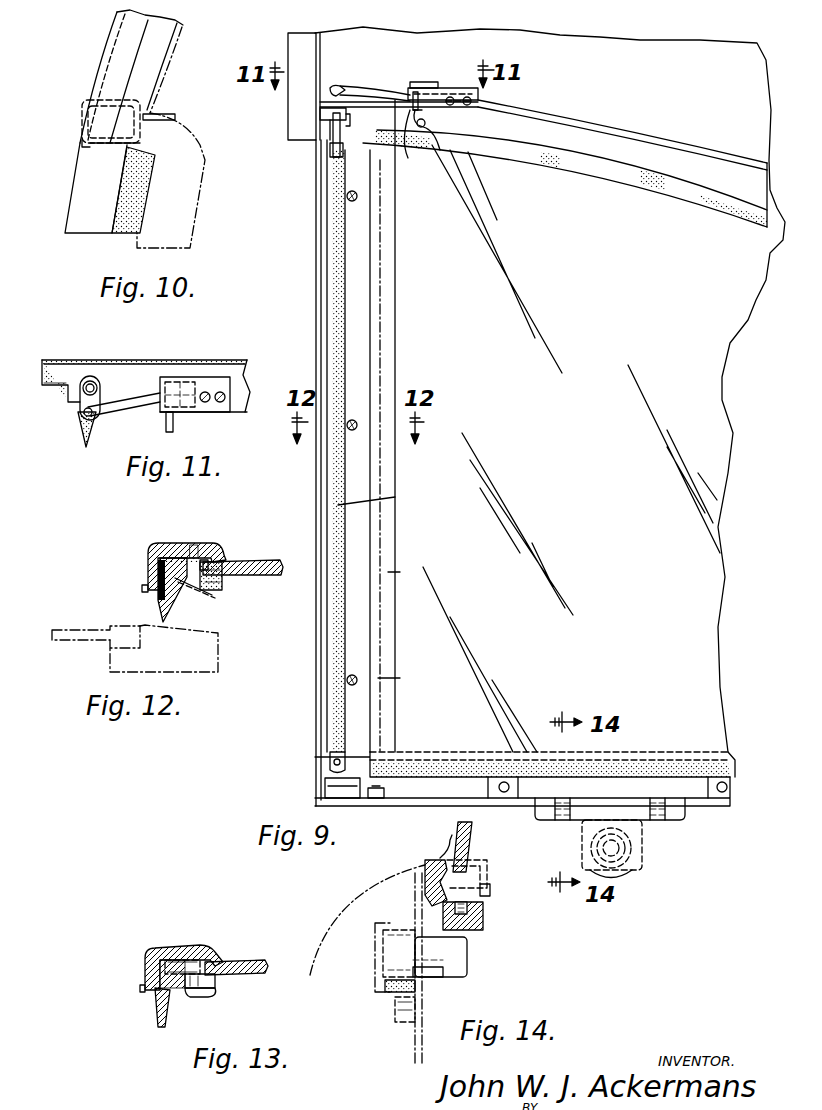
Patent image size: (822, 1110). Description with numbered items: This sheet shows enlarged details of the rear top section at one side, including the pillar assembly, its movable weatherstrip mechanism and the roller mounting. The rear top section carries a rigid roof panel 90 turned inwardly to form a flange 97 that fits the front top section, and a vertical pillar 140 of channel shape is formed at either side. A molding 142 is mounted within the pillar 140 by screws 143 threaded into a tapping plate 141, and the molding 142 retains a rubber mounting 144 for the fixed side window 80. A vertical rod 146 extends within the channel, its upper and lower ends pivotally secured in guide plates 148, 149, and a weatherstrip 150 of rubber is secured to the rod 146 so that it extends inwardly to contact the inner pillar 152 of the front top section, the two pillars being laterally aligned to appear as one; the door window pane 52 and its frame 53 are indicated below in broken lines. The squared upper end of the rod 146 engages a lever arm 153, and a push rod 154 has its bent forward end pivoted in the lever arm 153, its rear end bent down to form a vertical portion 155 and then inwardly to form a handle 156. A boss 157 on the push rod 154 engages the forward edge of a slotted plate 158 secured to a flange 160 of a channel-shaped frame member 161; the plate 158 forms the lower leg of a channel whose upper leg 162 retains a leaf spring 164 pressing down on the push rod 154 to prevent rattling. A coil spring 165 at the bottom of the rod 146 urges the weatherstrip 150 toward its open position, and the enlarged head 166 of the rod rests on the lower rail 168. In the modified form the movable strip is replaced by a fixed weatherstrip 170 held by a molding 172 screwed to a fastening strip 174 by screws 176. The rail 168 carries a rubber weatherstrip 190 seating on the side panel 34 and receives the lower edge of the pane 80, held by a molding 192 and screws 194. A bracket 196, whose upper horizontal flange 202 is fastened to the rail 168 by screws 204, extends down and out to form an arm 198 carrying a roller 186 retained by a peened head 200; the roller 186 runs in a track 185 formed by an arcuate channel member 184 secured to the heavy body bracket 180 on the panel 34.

In FIG. 14, the rear panel 34 is at (378, 880).
In FIG. 12, the window pane 52 is at (75, 620).
In FIG. 12, the frame 53 is at (112, 640).
In FIG. 9, the side window 80 is at (571, 448).
In FIG. 12, the side window 80 is at (260, 562).
In FIG. 13, the side window 80 is at (240, 963).
In FIG. 14, the side window 80 is at (472, 832).
In FIG. 9, the roof panel 90 is at (550, 389).
In FIG. 10, the roof panel 90 is at (113, 48).
In FIG. 11, the roof panel 90 is at (90, 360).
In FIG. 9, the flange 97 is at (300, 48).
In FIG. 10, the flange 97 is at (105, 85).
In FIG. 11, the flange 97 is at (56, 362).
In FIG. 9, the vertical pillar 140 is at (365, 293).
In FIG. 10, the vertical pillar 140 is at (80, 198).
In FIG. 12, the vertical pillar 140 is at (147, 560).
In FIG. 13, the vertical pillar 140 is at (152, 948).
In FIG. 12, the tapping plate 141 is at (163, 556).
In FIG. 9, the molding 142 is at (411, 571).
In FIG. 12, the molding 142 is at (222, 590).
In FIG. 9, the screws 143 is at (406, 677).
In FIG. 12, the screws 143 is at (195, 556).
In FIG. 12, the rubber mounting 144 is at (222, 562).
In FIG. 9, the vertical rod 146 is at (330, 129).
In FIG. 11, the vertical rod 146 is at (100, 380).
In FIG. 12, the vertical rod 146 is at (184, 588).
In FIG. 9, the guide plate 148 is at (341, 120).
In FIG. 9, the guide plate 149 is at (384, 790).
In FIG. 9, the weatherstrip 150 is at (385, 498).
In FIG. 10, the weatherstrip 150 is at (140, 200).
In FIG. 11, the weatherstrip 150 is at (78, 425).
In FIG. 12, the weatherstrip 150 is at (160, 603).
In FIG. 10, the inner pillar 152 is at (193, 222).
In FIG. 12, the inner pillar 152 is at (218, 654).
In FIG. 9, the lever arm 153 is at (333, 86).
In FIG. 11, the lever arm 153 is at (84, 410).
In FIG. 9, the push rod 154 is at (380, 86).
In FIG. 11, the push rod 154 is at (145, 393).
In FIG. 9, the vertical portion 155 is at (408, 160).
In FIG. 9, the handle 156 is at (440, 150).
In FIG. 10, the handle 156 is at (163, 114).
In FIG. 11, the handle 156 is at (174, 426).
In FIG. 9, the boss 157 is at (414, 92).
In FIG. 9, the slotted plate 158 is at (452, 106).
In FIG. 11, the slotted plate 158 is at (186, 377).
In FIG. 9, the flange 160 is at (580, 118).
In FIG. 9, the frame member 161 is at (655, 148).
In FIG. 9, the upper leg 162 is at (474, 88).
In FIG. 9, the leaf spring 164 is at (430, 82).
In FIG. 9, the coil spring 165 is at (330, 762).
In FIG. 9, the enlarged head 166 is at (325, 788).
In FIG. 9, the rail 168 is at (708, 805).
In FIG. 14, the rail 168 is at (448, 855).
In FIG. 13, the fixed weatherstrip 170 is at (165, 1000).
In FIG. 13, the molding 172 is at (218, 986).
In FIG. 13, the fastening strip 174 is at (200, 952).
In FIG. 13, the screws 176 is at (212, 995).
In FIG. 14, the body bracket 180 is at (412, 1052).
In FIG. 14, the channel member 184 is at (372, 932).
In FIG. 14, the track 185 is at (393, 1005).
In FIG. 9, the roller 186 is at (622, 870).
In FIG. 14, the roller 186 is at (395, 990).
In FIG. 9, the rubber weatherstrip 190 is at (658, 752).
In FIG. 14, the rubber weatherstrip 190 is at (427, 862).
In FIG. 14, the molding 192 is at (490, 872).
In FIG. 14, the screws 194 is at (492, 888).
In FIG. 9, the bracket 196 is at (642, 840).
In FIG. 14, the bracket 196 is at (462, 957).
In FIG. 14, the arm 198 is at (436, 975).
In FIG. 14, the peened head 200 is at (380, 960).
In FIG. 9, the upper horizontal flange 202 is at (632, 827).
In FIG. 14, the upper horizontal flange 202 is at (485, 920).
In FIG. 9, the screws 204 is at (575, 808).
In FIG. 14, the screws 204 is at (470, 928).